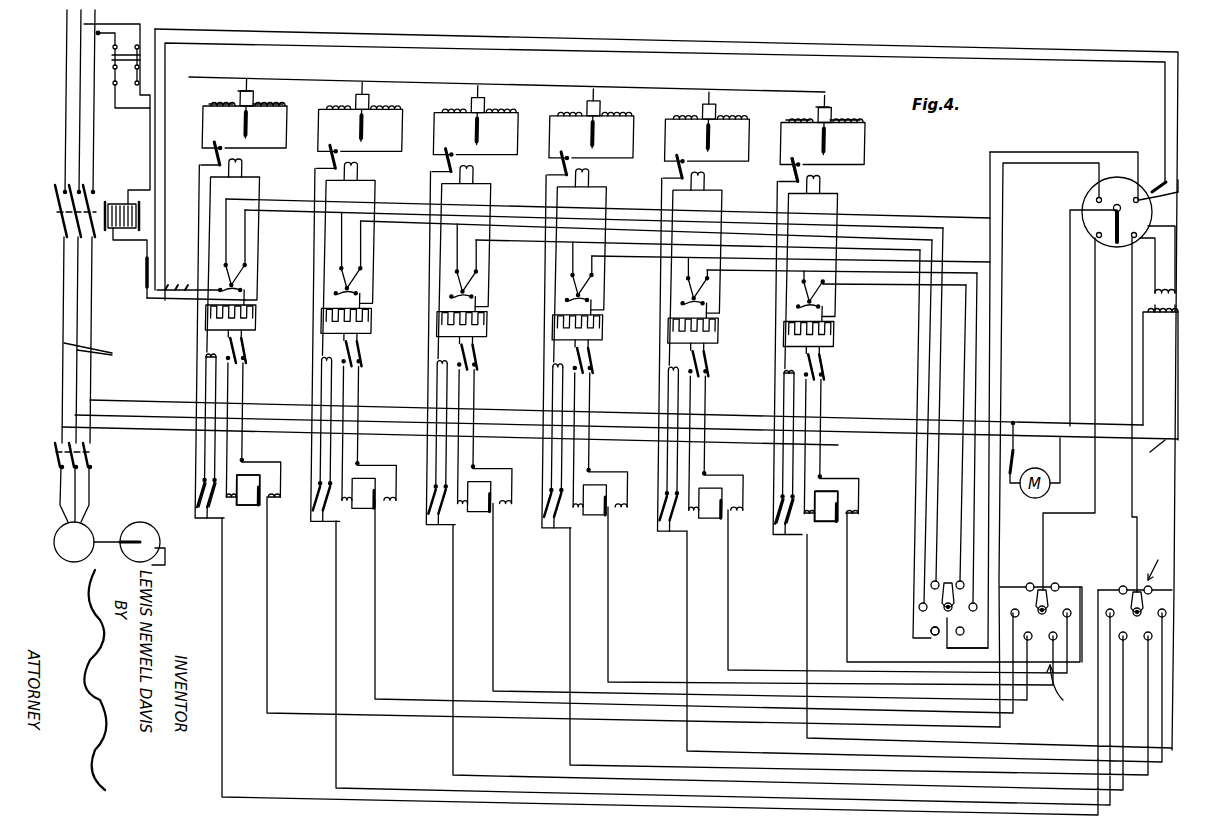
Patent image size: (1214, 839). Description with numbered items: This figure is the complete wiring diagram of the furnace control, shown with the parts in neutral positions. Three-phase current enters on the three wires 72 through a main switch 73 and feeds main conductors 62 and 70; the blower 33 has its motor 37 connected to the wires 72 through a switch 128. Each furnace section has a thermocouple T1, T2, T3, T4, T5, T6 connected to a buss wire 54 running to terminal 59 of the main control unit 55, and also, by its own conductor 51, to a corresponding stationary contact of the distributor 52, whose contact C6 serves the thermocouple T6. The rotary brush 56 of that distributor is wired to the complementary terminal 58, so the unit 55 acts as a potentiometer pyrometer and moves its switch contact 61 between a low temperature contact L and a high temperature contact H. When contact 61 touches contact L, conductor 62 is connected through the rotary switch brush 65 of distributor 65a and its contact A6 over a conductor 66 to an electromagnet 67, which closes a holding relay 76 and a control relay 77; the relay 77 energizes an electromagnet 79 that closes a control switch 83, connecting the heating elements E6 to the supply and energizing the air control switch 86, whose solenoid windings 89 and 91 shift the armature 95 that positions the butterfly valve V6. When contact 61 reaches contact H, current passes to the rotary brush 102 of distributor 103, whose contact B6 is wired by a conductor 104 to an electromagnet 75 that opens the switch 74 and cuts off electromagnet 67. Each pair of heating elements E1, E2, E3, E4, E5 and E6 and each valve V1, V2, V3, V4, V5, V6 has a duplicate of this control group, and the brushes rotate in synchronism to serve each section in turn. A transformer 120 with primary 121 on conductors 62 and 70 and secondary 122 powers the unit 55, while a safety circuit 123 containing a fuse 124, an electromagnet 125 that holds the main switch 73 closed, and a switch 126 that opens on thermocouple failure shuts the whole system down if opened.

The safety circuit 123 is at (540, 33).
The solenoid winding 89 is at (805, 117).
The core or armature 95 is at (832, 107).
The solenoid winding 91 is at (856, 118).
The air control switch 86 is at (793, 159).
The butterfly valve V6 is at (247, 138).
The butterfly valve V5 is at (362, 141).
The butterfly valve V4 is at (478, 144).
The butterfly valve V3 is at (594, 148).
The butterfly valve V2 is at (709, 151).
The butterfly valve V1 is at (825, 154).
The thermocouple T1 is at (236, 283).
The thermocouple T2 is at (352, 286).
The thermocouple T3 is at (467, 290).
The thermocouple T4 is at (583, 293).
The thermocouple T5 is at (698, 296).
The thermocouple T6 is at (814, 299).
The heating elements E1 is at (257, 312).
The heating elements E2 is at (373, 315).
The heating elements E3 is at (488, 318).
The heating elements E4 is at (604, 322).
The heating elements E5 is at (719, 325).
The heating elements E6 is at (835, 328).
The fuse 124 is at (248, 292).
The electromagnet 125 is at (120, 185).
The main switch 73 is at (83, 248).
The three wires 72 is at (96, 226).
The switch 128 is at (93, 455).
The motor 37 is at (84, 530).
The blower 33 is at (145, 523).
The electromagnet 79 is at (784, 375).
The control switch 83 is at (826, 379).
The control relay 77 is at (777, 531).
The holding relay 76 is at (789, 528).
The switch 74 is at (840, 503).
The electromagnet 67 is at (812, 516).
The electromagnet 75 is at (856, 515).
The buss wire 54 is at (910, 210).
The conductor 51 is at (918, 360).
The conductor 62 is at (1030, 424).
The main conductor 70 is at (1159, 457).
The main control unit 55 is at (1116, 160).
The terminal 58 is at (1094, 198).
The terminal 59 is at (1165, 198).
The switch contact 61 is at (1120, 245).
The switch 126 is at (1172, 185).
The secondary 122 is at (1168, 292).
The transformer 120 is at (1155, 305).
The primary 121 is at (1158, 316).
The high temperature contact H is at (1072, 404).
The low temperature contact L is at (1137, 405).
The stationary contact C6 is at (966, 583).
The distributor 52 is at (955, 575).
The rotary brush 56 is at (931, 605).
The stationary contact B6 is at (1058, 588).
The rotary switch member or brush 102 is at (1045, 592).
The distributor 103 is at (1069, 686).
The contact A6 is at (1152, 590).
The rotary switch brush 65 is at (1138, 600).
The distributor 65a is at (1166, 559).
The conductor 104 is at (893, 718).
The conductor 66 is at (1064, 810).